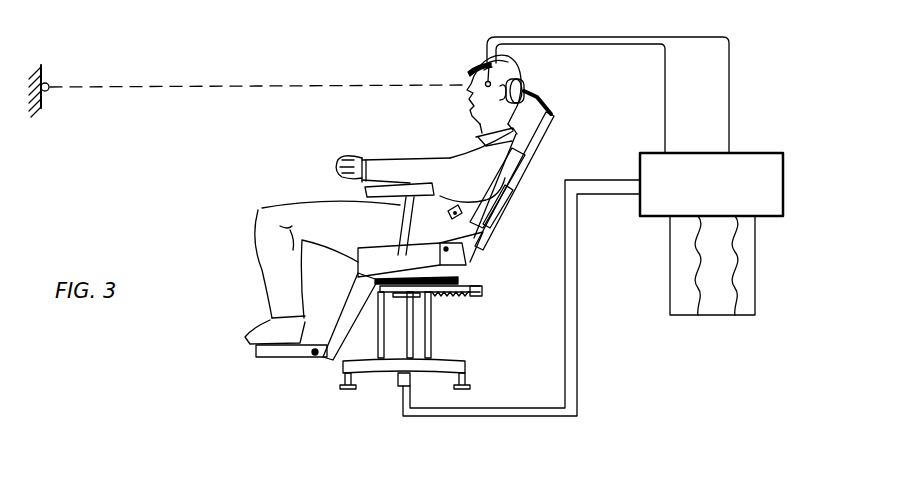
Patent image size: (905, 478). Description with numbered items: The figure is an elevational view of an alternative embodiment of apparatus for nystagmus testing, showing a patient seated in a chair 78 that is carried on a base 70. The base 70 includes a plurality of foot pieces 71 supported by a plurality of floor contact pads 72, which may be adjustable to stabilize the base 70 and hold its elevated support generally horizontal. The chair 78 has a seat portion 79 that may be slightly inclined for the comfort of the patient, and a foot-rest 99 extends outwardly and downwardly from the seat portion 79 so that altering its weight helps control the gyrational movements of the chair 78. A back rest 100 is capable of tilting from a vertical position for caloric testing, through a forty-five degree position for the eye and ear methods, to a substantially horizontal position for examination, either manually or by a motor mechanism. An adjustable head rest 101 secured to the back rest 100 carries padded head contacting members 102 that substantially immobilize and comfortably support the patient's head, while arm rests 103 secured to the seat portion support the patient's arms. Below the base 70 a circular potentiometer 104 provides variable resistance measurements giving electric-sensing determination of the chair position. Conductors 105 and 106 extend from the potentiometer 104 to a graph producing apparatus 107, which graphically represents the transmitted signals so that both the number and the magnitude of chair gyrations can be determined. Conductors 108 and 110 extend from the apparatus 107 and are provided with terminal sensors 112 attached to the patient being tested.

The base 70 is at (436, 332).
The foot pieces 71 is at (453, 361).
The floor contact pads 72 is at (463, 398).
The chair 78 is at (533, 169).
The seat portion 79 is at (357, 268).
The foot-rest 99 is at (288, 357).
The back rest 100 is at (500, 226).
The head rest 101 is at (536, 92).
The padded head contacting members 102 is at (527, 85).
The arm rests 103 is at (401, 192).
The circular potentiometer 104 is at (402, 378).
The conductor 105 is at (565, 287).
The conductor 106 is at (580, 300).
The graph producing apparatus 107 is at (740, 157).
The conductor 108 is at (663, 90).
The conductor 110 is at (732, 102).
The terminal sensors 112 is at (486, 63).